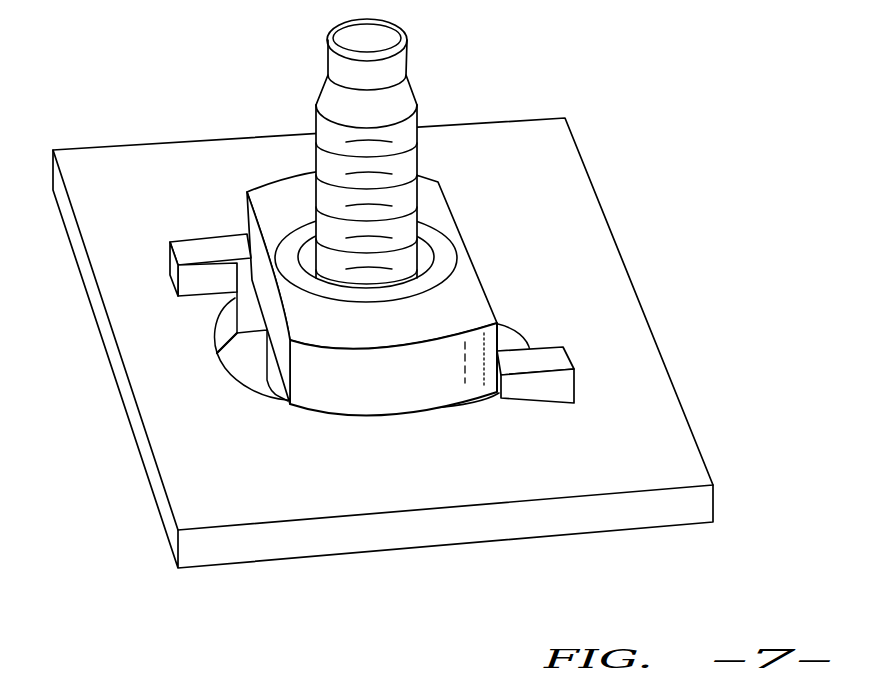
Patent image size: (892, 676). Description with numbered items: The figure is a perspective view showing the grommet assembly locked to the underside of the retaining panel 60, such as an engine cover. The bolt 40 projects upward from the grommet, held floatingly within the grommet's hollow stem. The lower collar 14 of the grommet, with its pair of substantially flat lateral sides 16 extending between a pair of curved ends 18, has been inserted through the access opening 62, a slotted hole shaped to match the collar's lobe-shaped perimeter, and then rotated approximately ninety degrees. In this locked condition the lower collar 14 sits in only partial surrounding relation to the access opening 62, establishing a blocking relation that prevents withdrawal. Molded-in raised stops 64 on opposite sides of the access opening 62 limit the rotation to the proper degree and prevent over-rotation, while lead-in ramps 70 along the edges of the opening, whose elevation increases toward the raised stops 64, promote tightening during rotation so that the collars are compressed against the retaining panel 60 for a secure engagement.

The lower collar 14 is at (391, 261).
The lateral sides 16 is at (272, 312).
The curved ends 18 is at (262, 190).
The bolt 40 is at (413, 87).
The retaining panel 60 is at (646, 438).
The access opening 62 is at (508, 313).
The raised stops 64 is at (195, 253).
The lead-in ramps 70 is at (489, 401).